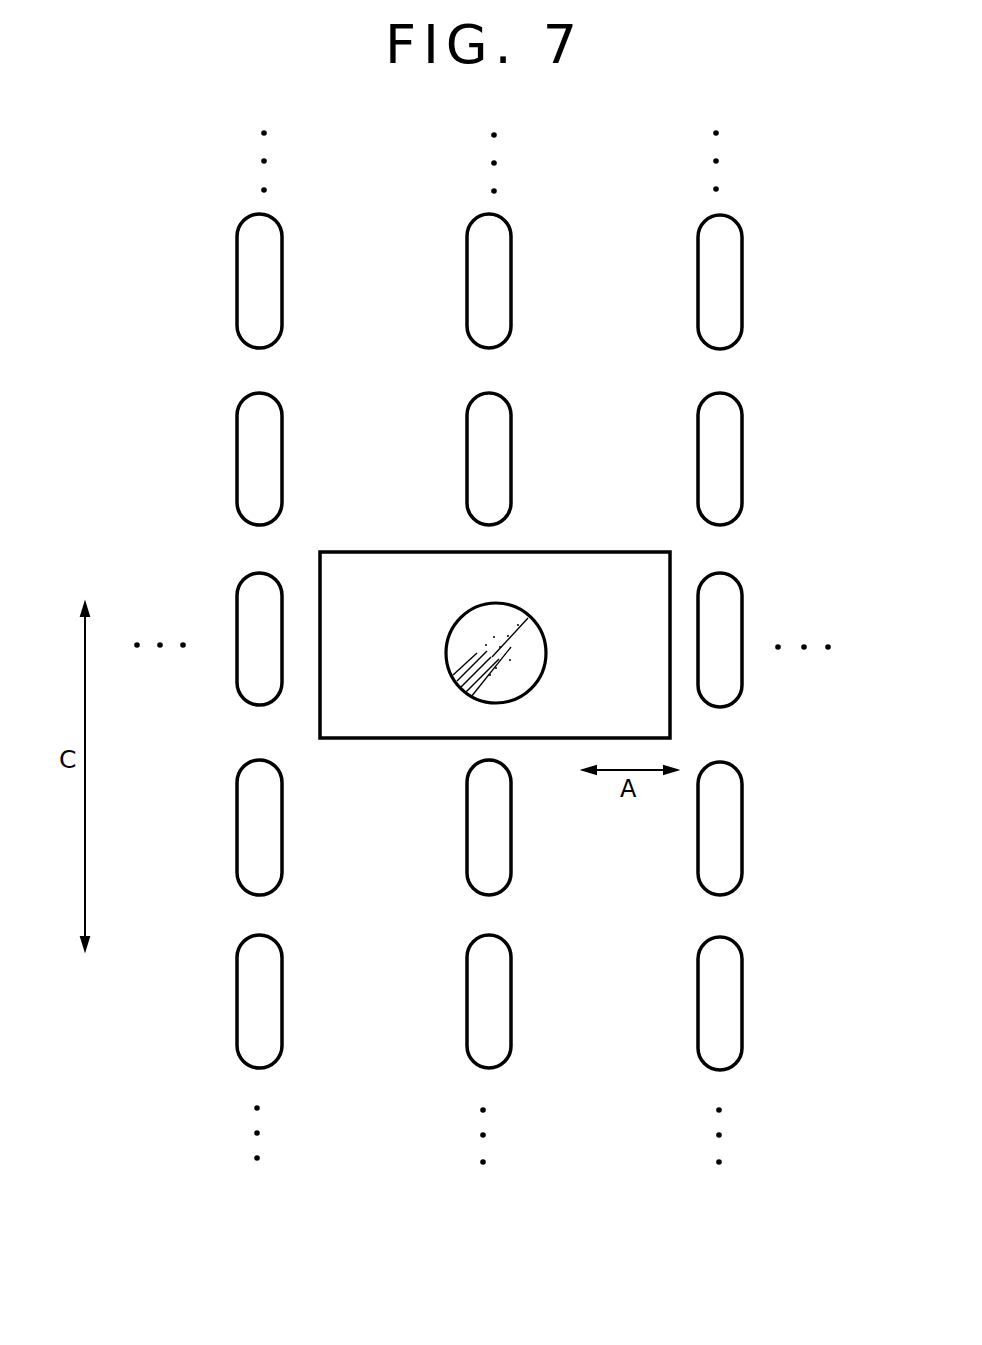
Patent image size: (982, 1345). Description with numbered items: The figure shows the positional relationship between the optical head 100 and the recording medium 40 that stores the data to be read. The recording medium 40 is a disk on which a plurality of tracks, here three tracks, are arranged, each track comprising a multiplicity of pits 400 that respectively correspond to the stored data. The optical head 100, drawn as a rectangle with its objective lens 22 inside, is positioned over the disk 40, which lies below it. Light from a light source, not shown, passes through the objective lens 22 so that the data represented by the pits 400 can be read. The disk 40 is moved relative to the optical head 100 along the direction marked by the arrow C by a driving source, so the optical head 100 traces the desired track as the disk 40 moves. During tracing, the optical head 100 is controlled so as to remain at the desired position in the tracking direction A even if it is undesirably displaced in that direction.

The optical head 100 is at (578, 552).
The objective lens 22 is at (546, 668).
The pit 400 is at (742, 982).
The recording medium 40 is at (482, 700).